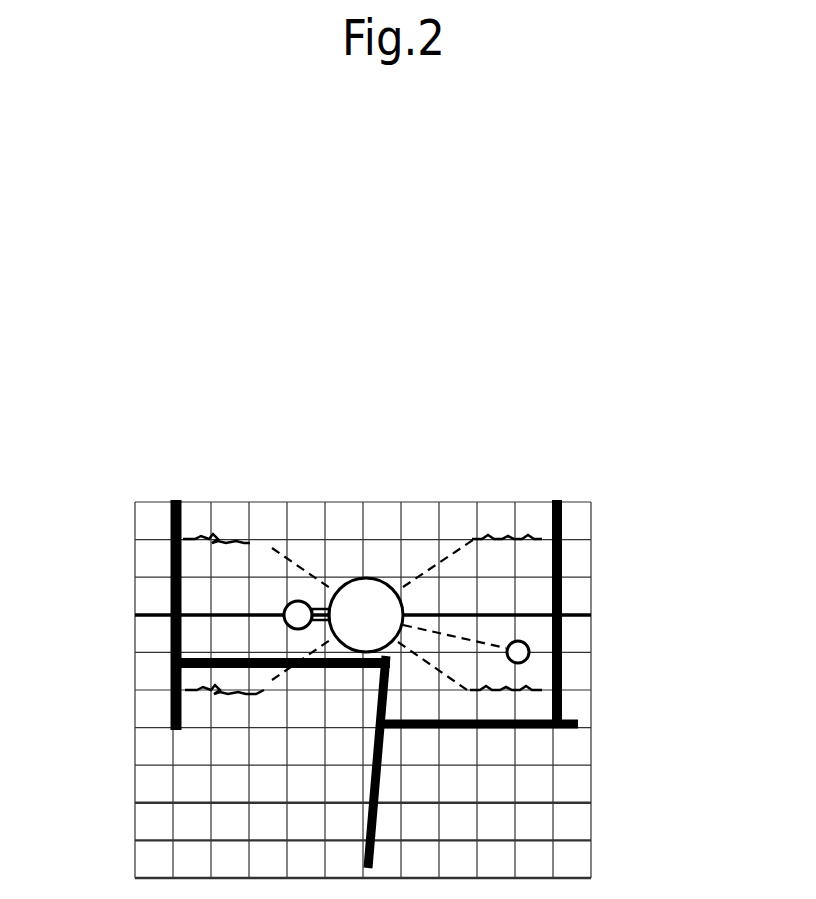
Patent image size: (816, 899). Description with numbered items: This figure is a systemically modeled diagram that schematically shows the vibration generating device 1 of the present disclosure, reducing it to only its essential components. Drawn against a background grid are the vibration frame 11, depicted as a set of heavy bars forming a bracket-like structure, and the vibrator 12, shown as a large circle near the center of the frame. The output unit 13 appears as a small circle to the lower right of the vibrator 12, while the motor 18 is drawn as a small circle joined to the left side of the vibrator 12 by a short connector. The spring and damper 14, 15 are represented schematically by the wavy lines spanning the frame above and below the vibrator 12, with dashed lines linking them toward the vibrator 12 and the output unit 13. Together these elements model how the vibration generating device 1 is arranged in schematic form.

The vibration generating device 1 is at (96, 473).
The vibration frame 11 is at (558, 707).
The vibrator 12 is at (385, 637).
The output unit 13 is at (528, 656).
The spring 14 is at (517, 538).
The damper 15 is at (373, 548).
The motor 18 is at (296, 610).